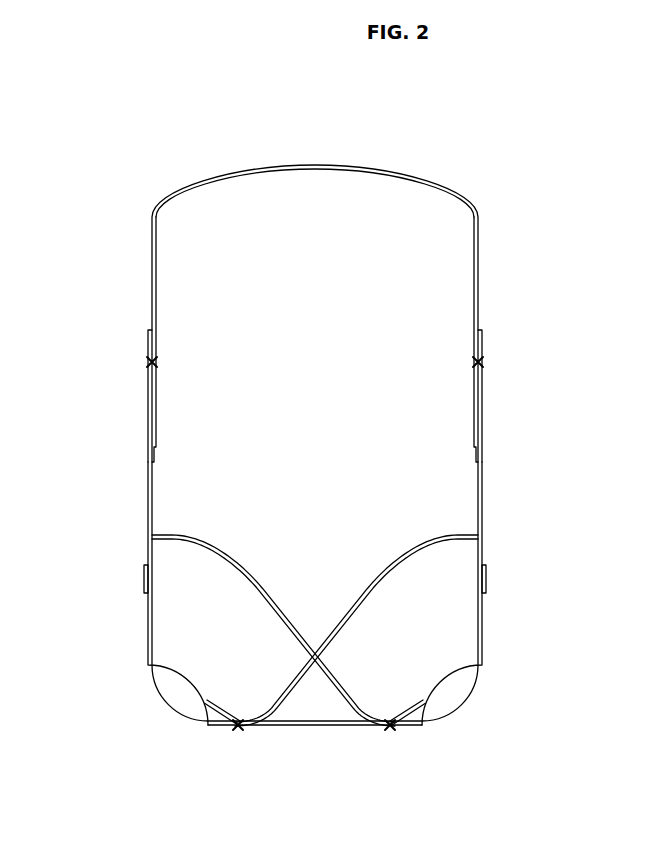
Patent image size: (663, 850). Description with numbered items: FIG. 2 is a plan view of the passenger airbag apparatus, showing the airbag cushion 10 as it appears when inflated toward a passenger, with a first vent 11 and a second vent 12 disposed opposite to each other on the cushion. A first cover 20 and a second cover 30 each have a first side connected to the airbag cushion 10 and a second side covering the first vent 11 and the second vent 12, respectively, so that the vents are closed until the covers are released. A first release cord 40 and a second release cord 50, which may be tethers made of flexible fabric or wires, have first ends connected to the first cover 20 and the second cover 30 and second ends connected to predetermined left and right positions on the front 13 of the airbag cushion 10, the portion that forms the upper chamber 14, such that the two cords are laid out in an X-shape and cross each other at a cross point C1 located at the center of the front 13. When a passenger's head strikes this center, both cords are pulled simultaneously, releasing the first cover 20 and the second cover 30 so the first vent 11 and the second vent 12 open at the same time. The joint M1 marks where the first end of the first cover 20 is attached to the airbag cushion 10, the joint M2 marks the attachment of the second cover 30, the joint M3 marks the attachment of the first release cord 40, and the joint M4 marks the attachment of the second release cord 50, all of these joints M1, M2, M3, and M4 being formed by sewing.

The airbag cushion 10 is at (503, 187).
The first vent 11 is at (480, 462).
The second vent 12 is at (150, 462).
The front 13 is at (324, 729).
The upper chamber 14 is at (303, 244).
The first cover 20 is at (482, 502).
The second cover 30 is at (148, 484).
The first release cord 40 is at (405, 555).
The second release cord 50 is at (226, 557).
The cross point C1 is at (316, 657).
The joint M1 is at (482, 362).
The joint M2 is at (150, 362).
The joint M3 is at (238, 731).
The joint M4 is at (389, 731).